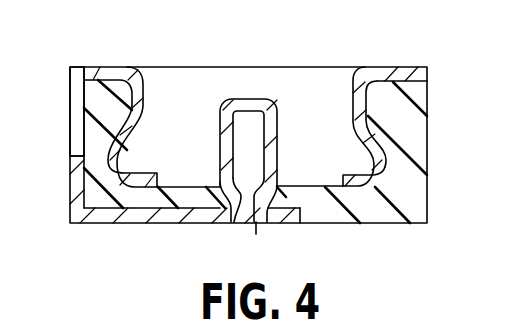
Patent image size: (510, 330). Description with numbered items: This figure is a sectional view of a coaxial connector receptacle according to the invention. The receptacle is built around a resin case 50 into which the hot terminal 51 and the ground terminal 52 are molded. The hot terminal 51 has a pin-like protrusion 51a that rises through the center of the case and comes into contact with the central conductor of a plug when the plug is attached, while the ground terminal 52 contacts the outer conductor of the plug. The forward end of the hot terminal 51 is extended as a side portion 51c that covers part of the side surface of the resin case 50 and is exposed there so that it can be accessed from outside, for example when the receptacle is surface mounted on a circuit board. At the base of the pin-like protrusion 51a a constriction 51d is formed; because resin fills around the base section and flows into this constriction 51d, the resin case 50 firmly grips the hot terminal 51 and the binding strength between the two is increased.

The resin case 50 is at (412, 160).
The hot terminal 51 is at (199, 151).
The pin-like protrusion 51a is at (277, 115).
The side portion 51c is at (70, 191).
The constriction 51d is at (252, 246).
The ground terminal 52 is at (393, 67).